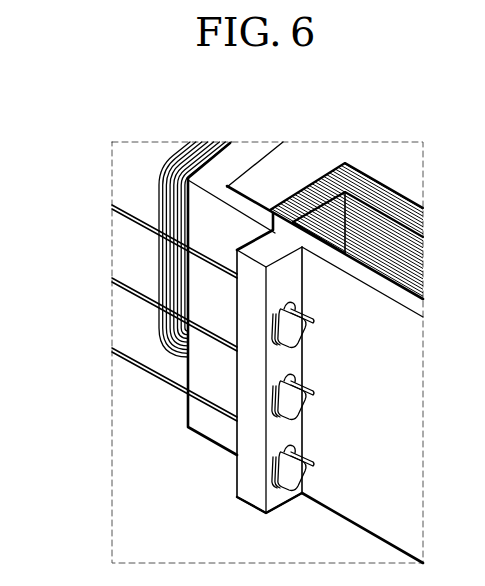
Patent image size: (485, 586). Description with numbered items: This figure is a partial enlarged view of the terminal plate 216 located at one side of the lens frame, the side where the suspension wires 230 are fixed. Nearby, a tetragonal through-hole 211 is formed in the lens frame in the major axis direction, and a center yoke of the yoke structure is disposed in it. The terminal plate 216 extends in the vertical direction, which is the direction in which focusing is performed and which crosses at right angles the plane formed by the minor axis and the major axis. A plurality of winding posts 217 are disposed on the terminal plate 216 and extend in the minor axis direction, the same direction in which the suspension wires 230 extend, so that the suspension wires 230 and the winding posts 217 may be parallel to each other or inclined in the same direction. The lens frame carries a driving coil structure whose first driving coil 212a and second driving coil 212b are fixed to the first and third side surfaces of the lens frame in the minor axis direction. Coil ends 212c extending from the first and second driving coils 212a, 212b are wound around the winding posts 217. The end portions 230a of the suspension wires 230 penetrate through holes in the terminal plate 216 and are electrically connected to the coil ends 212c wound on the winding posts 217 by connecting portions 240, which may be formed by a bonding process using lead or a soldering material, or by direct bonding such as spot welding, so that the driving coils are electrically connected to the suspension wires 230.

The tetragonal through-hole 211 is at (296, 168).
The first driving coil 212a is at (165, 200).
The second driving coil 212b is at (393, 198).
The coil ends 212c is at (263, 507).
The terminal plate 216 is at (237, 483).
The winding posts 217 is at (288, 482).
The suspension wires 230 is at (120, 213).
The end portions of the suspension wires 230a is at (312, 464).
The connecting portions 240 is at (305, 447).